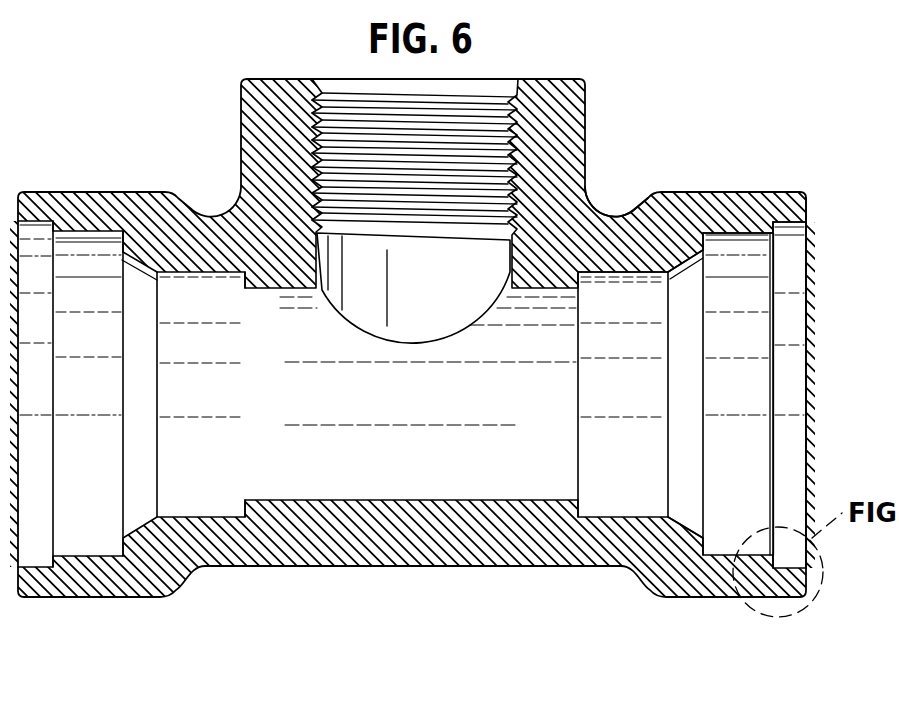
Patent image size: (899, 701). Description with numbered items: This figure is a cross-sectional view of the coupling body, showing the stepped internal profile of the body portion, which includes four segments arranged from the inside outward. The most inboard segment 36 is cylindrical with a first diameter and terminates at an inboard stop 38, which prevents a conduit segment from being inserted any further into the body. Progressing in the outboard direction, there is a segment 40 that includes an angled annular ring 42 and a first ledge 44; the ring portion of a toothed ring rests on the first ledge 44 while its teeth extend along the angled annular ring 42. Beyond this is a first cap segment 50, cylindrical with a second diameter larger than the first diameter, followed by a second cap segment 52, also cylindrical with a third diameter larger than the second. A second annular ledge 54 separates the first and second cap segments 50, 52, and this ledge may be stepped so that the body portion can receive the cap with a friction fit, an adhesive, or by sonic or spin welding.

The most inboard segment 36 is at (626, 218).
The inboard stop 38 is at (590, 288).
The segment 40 is at (698, 516).
The angled annular ring 42 is at (689, 252).
The first ledge 44 is at (725, 240).
The first cap segment 50 is at (763, 230).
The second cap segment 52 is at (806, 230).
The second annular ledge 54 is at (783, 228).